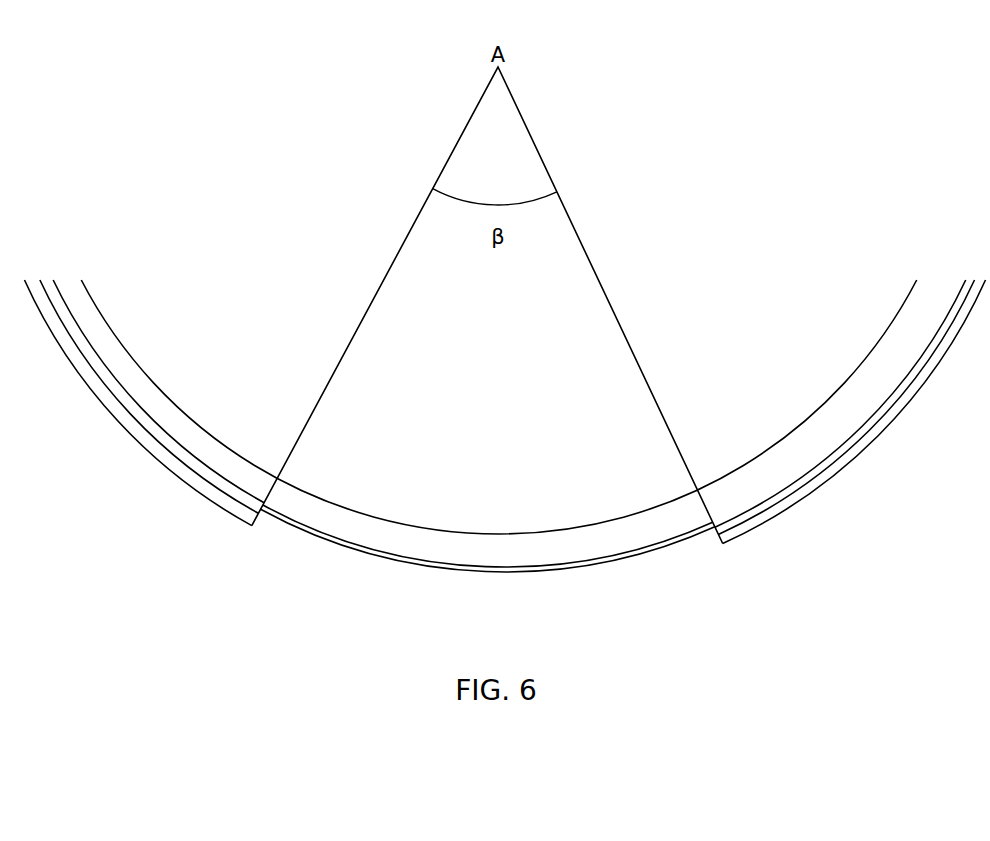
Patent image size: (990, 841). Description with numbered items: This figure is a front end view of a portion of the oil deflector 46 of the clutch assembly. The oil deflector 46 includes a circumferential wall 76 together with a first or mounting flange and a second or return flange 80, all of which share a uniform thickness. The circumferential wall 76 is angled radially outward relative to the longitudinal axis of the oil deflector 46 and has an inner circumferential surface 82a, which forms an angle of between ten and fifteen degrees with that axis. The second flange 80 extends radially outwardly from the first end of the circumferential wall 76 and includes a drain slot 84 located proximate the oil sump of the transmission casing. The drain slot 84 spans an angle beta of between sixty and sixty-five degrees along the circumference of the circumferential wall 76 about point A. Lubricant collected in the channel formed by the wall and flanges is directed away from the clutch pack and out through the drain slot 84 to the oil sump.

The oil deflector 46 is at (890, 509).
The circumferential wall 76 is at (806, 440).
The second flange 80 is at (798, 500).
The inner circumferential surface 82a is at (882, 365).
The drain slot 84 is at (617, 560).